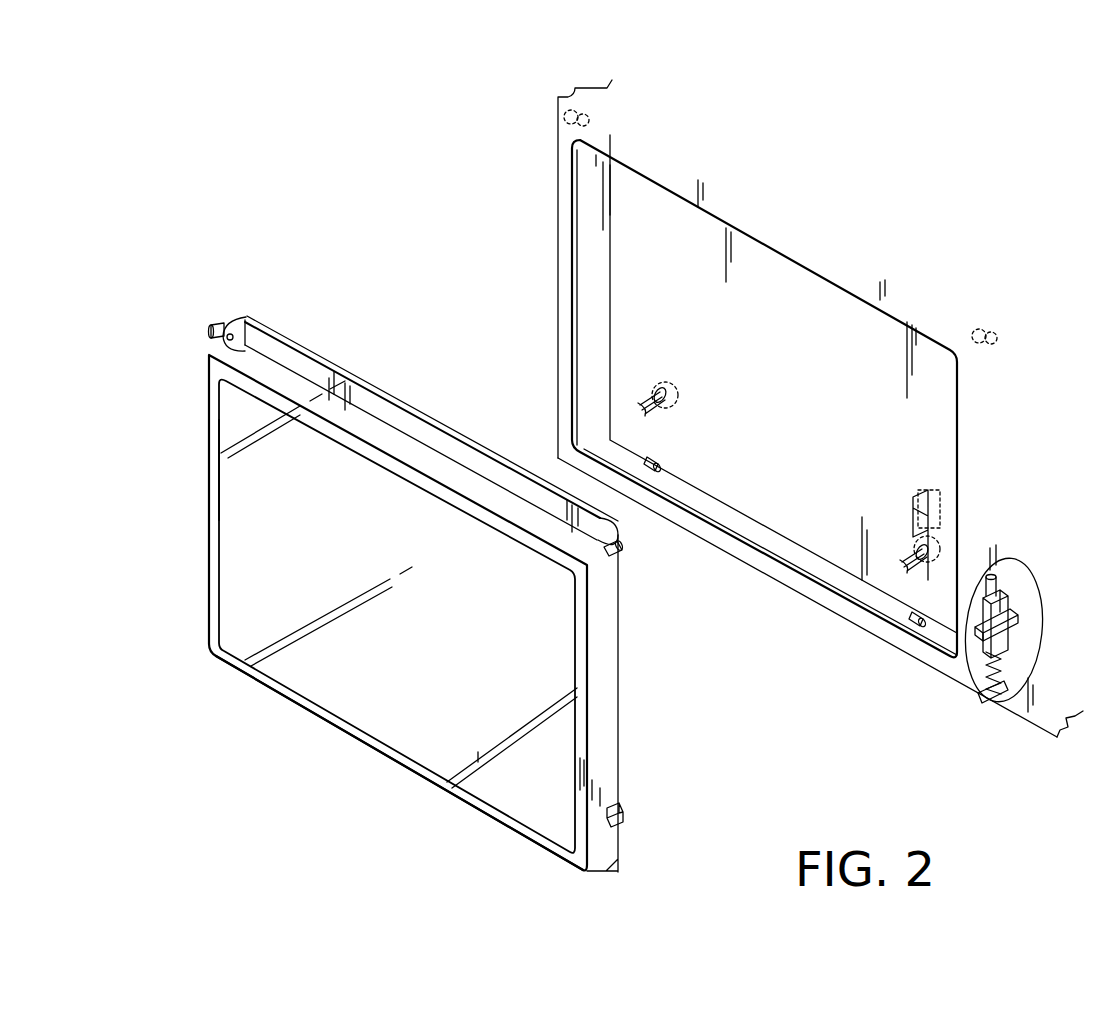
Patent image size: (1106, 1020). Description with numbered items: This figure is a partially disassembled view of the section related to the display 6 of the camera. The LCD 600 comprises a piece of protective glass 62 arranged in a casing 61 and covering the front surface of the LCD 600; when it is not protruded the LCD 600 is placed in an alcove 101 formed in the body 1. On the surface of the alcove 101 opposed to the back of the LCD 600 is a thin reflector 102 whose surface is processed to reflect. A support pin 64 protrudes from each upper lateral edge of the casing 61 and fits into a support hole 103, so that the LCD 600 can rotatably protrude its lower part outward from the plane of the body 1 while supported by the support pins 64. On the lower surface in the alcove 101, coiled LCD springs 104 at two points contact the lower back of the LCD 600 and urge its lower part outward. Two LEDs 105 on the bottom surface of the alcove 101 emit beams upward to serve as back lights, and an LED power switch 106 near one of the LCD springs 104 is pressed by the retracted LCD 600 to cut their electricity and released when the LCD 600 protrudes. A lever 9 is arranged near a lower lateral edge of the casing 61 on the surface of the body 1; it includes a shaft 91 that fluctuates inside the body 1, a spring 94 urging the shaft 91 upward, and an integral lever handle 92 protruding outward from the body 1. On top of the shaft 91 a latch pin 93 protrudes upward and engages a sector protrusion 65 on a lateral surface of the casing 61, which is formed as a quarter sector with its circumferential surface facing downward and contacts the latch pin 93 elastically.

The body 1 is at (556, 150).
The alcove 101 is at (840, 288).
The reflector 102 is at (938, 394).
The support hole 103 is at (588, 120).
The LCD spring 104 is at (651, 395).
The LED 105 is at (660, 462).
The LED power switch 106 is at (940, 498).
The display 6 is at (283, 720).
The LCD 600 is at (240, 548).
The casing 61 is at (612, 708).
The protective glass 62 is at (422, 744).
The support pin 64 is at (218, 327).
The sector protrusion 65 is at (625, 814).
The lever 9 is at (1017, 638).
The shaft 91 is at (1010, 618).
The lever handle 92 is at (972, 678).
The latch pin 93 is at (993, 575).
The spring 94 is at (988, 704).